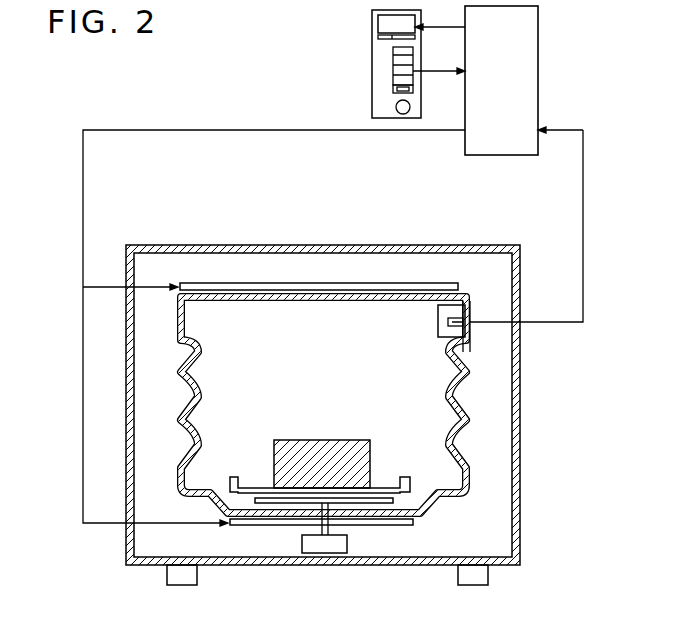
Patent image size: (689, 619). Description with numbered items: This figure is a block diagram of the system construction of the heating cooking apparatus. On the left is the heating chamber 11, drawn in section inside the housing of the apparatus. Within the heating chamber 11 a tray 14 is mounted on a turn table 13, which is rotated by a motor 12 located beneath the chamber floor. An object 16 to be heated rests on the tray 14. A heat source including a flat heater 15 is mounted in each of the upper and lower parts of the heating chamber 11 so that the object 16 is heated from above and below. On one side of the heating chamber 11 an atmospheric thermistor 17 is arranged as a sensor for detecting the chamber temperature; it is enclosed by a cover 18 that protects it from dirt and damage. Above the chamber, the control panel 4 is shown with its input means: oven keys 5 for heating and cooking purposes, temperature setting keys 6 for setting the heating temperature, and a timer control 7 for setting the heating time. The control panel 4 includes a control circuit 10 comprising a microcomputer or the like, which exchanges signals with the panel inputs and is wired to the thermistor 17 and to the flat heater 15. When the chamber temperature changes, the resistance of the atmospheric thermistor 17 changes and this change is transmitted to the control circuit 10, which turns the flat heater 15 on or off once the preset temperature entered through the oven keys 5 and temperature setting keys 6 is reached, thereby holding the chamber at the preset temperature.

The control panel 4 is at (378, 30).
The oven keys 5 is at (393, 71).
The temperature setting keys 6 is at (393, 88).
The timer control 7 is at (396, 107).
The control circuit 10 is at (538, 47).
The heating chamber 11 is at (295, 335).
The motor 12 is at (325, 553).
The turn table 13 is at (370, 503).
The tray 14 is at (430, 493).
The flat heater 15 is at (236, 283).
The object 16 is at (365, 466).
The atmospheric thermistor 17 is at (468, 325).
The cover 18 is at (440, 308).